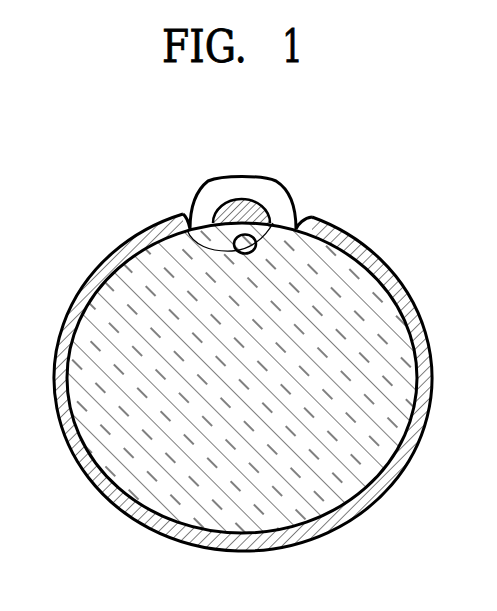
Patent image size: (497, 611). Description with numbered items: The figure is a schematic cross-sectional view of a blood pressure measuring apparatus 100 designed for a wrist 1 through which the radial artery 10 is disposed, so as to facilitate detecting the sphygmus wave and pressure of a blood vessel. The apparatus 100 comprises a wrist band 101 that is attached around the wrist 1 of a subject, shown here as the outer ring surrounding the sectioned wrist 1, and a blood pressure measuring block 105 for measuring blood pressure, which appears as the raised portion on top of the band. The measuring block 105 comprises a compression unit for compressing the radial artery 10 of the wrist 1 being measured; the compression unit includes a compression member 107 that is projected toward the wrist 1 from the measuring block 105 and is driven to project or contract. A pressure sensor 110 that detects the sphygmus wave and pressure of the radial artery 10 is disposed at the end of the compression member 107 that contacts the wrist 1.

The blood pressure measuring apparatus 100 is at (368, 193).
The wrist 1 is at (374, 298).
The wrist band 101 is at (88, 282).
The radial artery 10 is at (186, 230).
The blood pressure measuring block 105 is at (205, 196).
The compression member 107 is at (245, 203).
The pressure sensor 110 is at (273, 222).